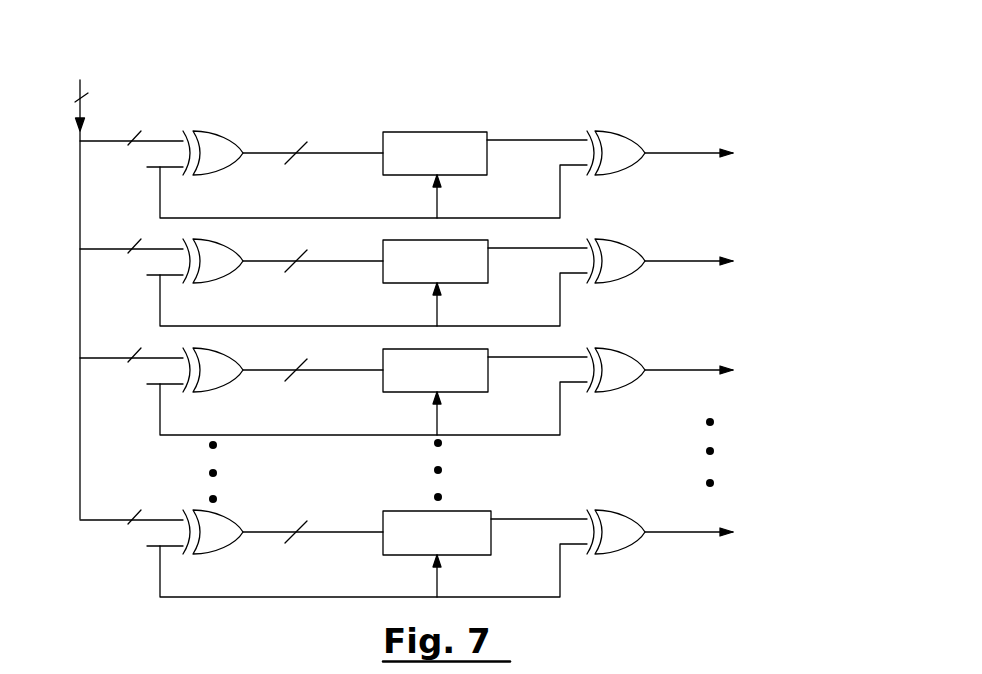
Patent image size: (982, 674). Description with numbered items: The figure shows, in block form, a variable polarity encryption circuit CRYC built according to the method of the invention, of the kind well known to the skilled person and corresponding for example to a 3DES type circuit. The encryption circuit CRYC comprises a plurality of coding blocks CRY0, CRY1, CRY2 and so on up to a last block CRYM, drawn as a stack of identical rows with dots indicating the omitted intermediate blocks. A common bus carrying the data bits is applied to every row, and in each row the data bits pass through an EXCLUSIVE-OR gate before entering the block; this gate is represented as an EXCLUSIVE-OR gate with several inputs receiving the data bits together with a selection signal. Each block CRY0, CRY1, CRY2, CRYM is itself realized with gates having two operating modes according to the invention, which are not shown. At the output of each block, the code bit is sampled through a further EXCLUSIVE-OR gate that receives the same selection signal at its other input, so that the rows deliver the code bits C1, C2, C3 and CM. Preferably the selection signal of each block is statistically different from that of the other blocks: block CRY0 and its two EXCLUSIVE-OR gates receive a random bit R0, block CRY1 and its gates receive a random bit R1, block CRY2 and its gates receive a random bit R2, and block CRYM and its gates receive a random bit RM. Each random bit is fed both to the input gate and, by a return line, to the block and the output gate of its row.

The encryption circuit CRYC is at (549, 98).
The coding block CRY0 is at (472, 164).
The coding block CRY1 is at (472, 272).
The coding block CRY2 is at (472, 381).
The coding block CRYM is at (476, 543).
The random bit R0 is at (161, 158).
The random bit R1 is at (161, 266).
The random bit R2 is at (161, 375).
The random bit RM is at (161, 537).
The code bit C1 is at (681, 153).
The code bit C2 is at (681, 261).
The code bit C3 is at (681, 370).
The code bit CM is at (683, 532).